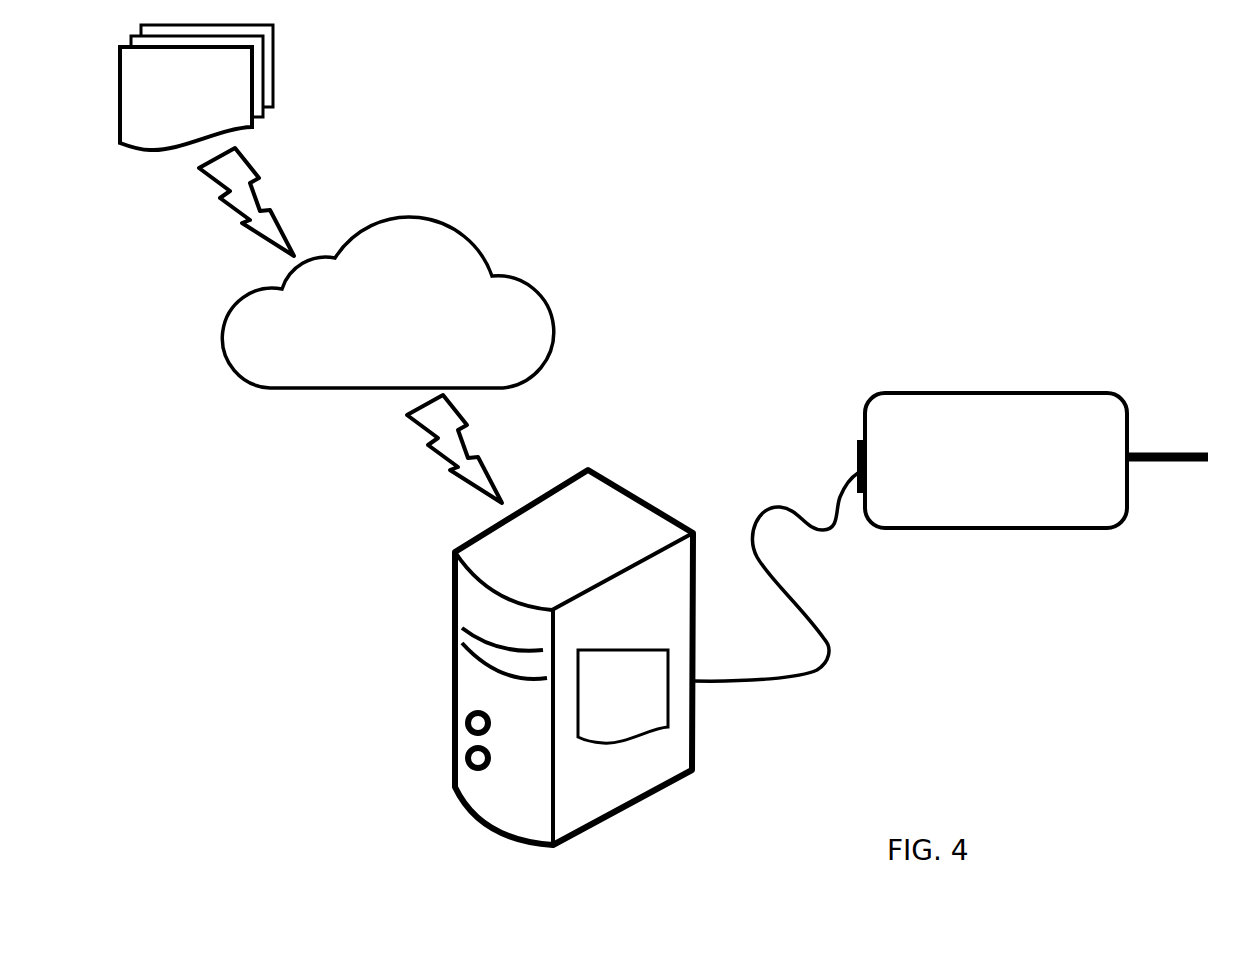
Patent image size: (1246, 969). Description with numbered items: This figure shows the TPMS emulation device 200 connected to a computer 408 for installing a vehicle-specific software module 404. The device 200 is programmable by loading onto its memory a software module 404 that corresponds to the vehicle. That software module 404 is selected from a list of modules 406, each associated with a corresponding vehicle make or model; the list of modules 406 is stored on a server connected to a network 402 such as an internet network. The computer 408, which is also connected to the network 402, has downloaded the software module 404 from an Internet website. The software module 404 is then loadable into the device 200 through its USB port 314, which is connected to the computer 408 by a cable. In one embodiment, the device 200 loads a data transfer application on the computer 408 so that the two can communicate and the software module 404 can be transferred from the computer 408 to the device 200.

The TPMS emulation device 200 is at (972, 478).
The USB port 314 is at (858, 440).
The network 402 is at (412, 334).
The software module 404 is at (598, 706).
The list of modules 406 is at (163, 112).
The computer 408 is at (592, 563).